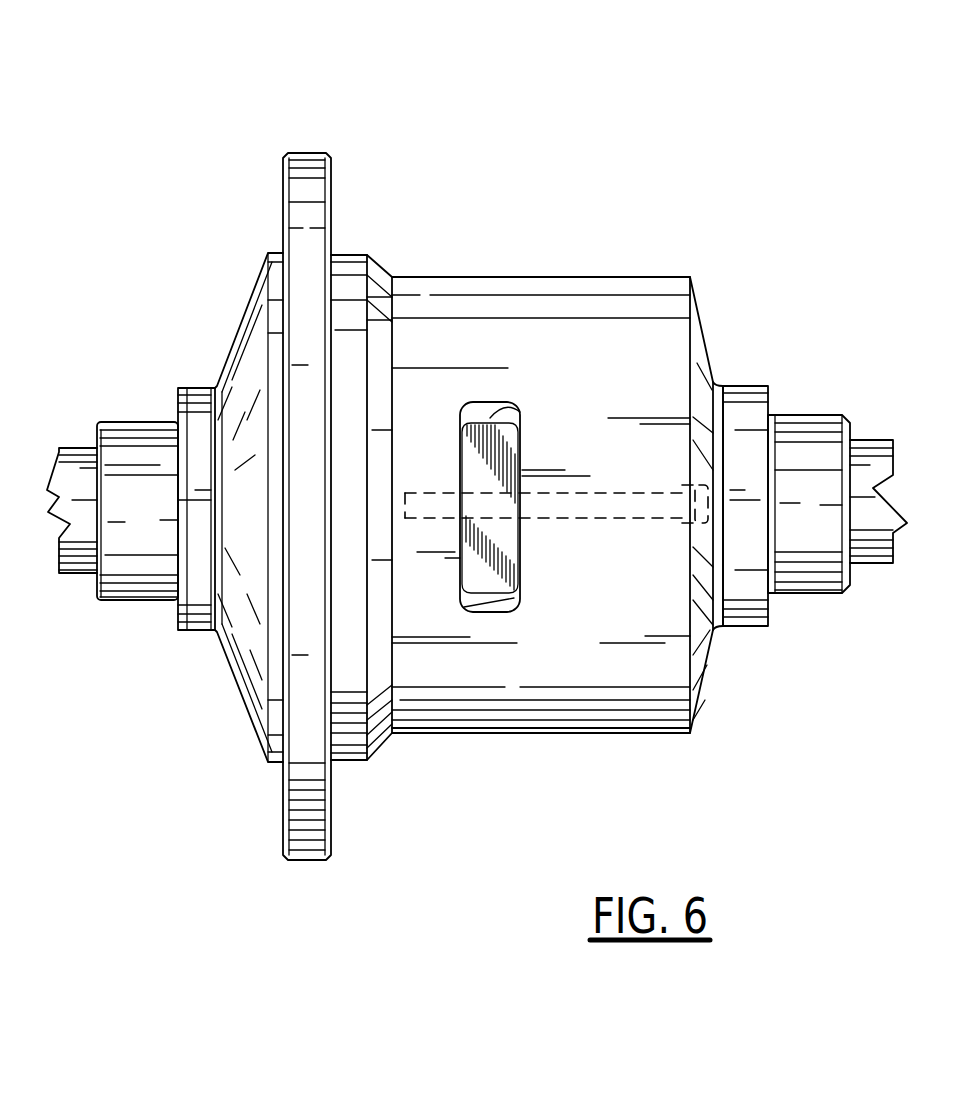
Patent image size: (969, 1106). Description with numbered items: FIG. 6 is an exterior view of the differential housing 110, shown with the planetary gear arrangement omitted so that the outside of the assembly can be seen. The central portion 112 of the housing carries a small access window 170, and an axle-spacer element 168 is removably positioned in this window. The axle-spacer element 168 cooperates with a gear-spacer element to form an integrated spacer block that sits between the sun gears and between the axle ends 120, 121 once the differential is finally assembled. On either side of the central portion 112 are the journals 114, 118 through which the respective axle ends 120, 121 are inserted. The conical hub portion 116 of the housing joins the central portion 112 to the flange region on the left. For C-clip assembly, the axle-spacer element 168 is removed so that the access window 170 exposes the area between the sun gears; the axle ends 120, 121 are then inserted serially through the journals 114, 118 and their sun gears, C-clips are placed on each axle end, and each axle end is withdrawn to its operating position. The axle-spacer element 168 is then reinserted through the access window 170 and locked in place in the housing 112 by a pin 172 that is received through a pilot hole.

The hub assembly 110 is at (458, 97).
The central portion of the housing 112 is at (514, 295).
The journal 114 is at (800, 585).
The hub flange cone 116 is at (250, 330).
The journal 118 is at (132, 437).
The axle end 120 is at (873, 440).
The axle end 121 is at (75, 573).
The axle-spacer element 168 is at (497, 470).
The access window 170 is at (472, 428).
The pin 172 is at (573, 508).